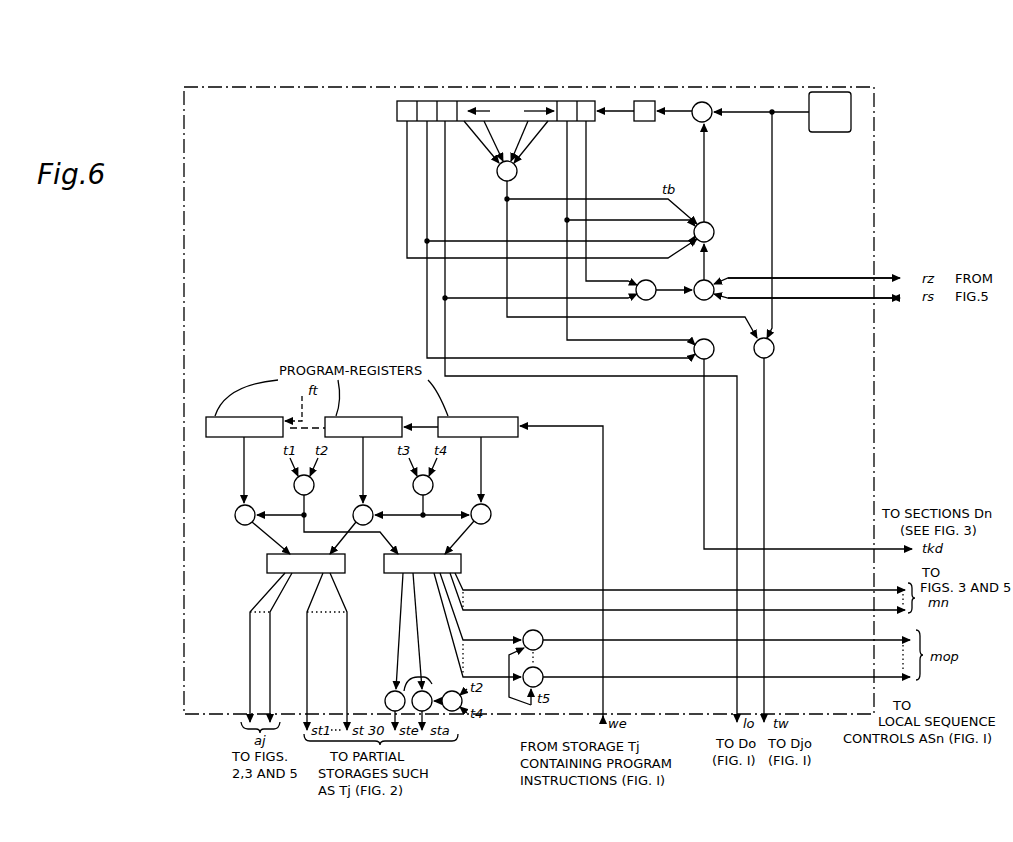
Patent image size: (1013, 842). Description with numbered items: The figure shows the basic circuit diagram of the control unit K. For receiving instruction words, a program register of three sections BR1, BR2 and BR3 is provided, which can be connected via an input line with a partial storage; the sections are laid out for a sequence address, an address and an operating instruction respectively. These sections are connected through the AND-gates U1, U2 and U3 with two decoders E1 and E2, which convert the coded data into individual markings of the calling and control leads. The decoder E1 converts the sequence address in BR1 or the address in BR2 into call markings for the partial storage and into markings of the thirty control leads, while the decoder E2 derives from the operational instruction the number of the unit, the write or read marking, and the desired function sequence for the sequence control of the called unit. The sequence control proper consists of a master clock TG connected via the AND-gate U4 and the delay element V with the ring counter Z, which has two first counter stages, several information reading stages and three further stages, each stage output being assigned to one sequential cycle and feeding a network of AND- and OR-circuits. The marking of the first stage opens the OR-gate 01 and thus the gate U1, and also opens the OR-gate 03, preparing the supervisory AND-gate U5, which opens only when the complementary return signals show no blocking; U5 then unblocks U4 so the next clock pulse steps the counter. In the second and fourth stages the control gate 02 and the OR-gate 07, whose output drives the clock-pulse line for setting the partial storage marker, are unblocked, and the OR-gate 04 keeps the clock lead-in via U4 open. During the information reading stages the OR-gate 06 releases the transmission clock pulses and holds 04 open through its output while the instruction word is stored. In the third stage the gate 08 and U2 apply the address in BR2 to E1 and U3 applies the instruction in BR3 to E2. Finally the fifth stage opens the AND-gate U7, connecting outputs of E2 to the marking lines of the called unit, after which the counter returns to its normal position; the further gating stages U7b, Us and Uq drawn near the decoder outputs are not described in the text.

The control unit K is at (183, 310).
The ring counter Z is at (397, 103).
The delay element V is at (632, 80).
The master clock TG is at (830, 92).
The AND-gate U4 is at (713, 119).
The OR-gate 04 is at (713, 232).
The OR-gate 06 is at (516, 173).
The OR-gate 03 is at (652, 282).
The supervisory AND-gate U5 is at (712, 281).
The OR-gate 07 is at (711, 341).
The AND-gate U7 is at (775, 348).
The AND gates U7b is at (544, 658).
The program register section BR1 is at (244, 418).
The program register section BR2 is at (363, 418).
The program register section BR3 is at (478, 418).
The OR-gate 01 is at (313, 485).
The gate 08 is at (432, 485).
The AND-gate U1 is at (254, 508).
The AND-gate U2 is at (372, 508).
The AND-gate U3 is at (490, 507).
The decoder E1 is at (268, 556).
The decoder E2 is at (384, 570).
The AND gate Us is at (387, 694).
The AND gate Uq is at (430, 693).
The control gate 02 is at (451, 690).